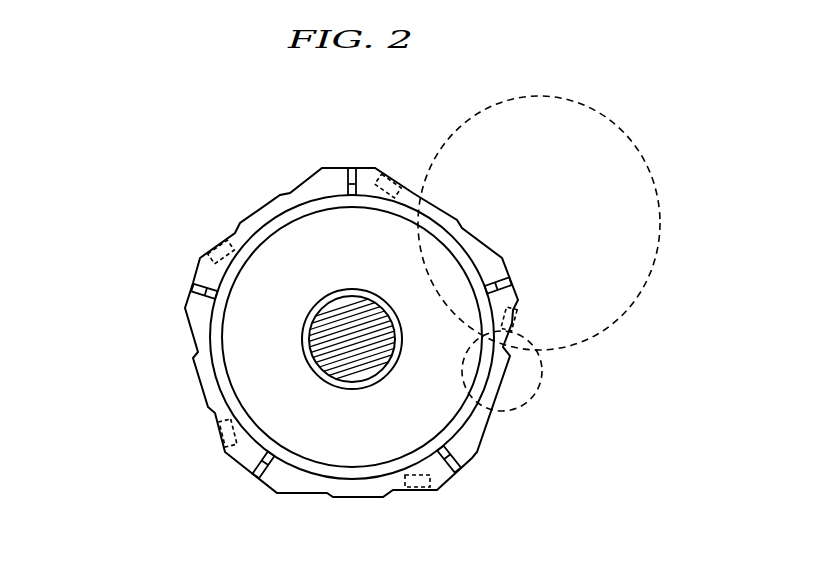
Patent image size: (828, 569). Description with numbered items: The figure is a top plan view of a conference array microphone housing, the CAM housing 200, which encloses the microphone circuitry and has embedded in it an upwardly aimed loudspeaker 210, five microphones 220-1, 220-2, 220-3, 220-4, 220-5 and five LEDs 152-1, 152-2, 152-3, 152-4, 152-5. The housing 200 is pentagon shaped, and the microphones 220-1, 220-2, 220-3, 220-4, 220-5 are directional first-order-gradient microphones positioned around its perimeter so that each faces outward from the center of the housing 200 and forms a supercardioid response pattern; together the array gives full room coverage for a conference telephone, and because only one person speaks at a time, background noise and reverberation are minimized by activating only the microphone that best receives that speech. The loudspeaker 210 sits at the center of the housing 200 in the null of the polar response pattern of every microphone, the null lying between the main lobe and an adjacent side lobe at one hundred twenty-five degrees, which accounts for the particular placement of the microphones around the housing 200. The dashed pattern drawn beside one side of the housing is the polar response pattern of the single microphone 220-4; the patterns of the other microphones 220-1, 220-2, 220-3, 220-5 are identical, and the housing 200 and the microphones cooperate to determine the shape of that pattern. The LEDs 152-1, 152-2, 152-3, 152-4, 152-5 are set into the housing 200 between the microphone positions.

The CAM housing 200 is at (258, 129).
The loudspeaker 210 is at (329, 292).
The LED 152-1 is at (252, 477).
The LED 152-2 is at (462, 469).
The LED 152-3 is at (510, 282).
The LED 152-4 is at (347, 168).
The LED 152-5 is at (192, 290).
The microphone 220-1 is at (212, 252).
The microphone 220-2 is at (218, 434).
The microphone 220-3 is at (418, 489).
The microphone 220-4 is at (522, 309).
The microphone 220-5 is at (390, 177).